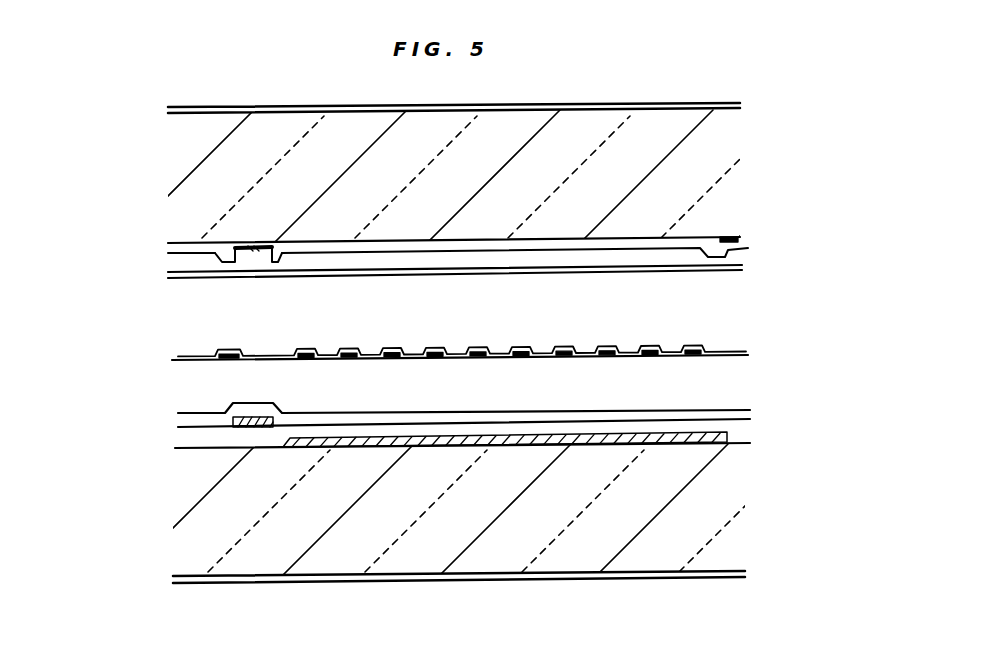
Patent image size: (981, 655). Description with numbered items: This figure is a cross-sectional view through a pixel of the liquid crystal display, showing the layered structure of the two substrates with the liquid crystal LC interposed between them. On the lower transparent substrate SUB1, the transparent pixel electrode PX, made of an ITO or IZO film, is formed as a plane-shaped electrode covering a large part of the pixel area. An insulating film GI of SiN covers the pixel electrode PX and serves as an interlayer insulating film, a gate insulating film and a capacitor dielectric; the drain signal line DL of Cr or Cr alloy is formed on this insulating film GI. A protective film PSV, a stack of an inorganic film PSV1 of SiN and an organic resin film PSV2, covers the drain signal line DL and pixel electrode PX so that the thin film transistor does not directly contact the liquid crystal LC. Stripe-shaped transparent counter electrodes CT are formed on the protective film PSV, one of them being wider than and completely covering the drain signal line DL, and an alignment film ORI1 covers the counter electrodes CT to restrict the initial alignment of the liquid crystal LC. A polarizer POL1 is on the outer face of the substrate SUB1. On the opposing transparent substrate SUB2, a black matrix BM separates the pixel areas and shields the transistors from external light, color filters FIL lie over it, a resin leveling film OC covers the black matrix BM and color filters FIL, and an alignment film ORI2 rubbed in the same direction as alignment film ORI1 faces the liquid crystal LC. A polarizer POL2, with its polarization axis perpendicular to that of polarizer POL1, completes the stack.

The polarizer POL2 is at (740, 105).
The transparent substrate SUB2 is at (713, 175).
The color filter FIL is at (380, 237).
The black matrix BM is at (240, 243).
The leveling film OC is at (750, 255).
The alignment film ORI2 is at (742, 267).
The liquid crystal LC is at (200, 307).
The alignment film ORI1 is at (747, 352).
The counter electrode CT is at (230, 350).
The protective film PSV is at (381, 397).
The organic film PSV2 is at (192, 383).
The inorganic film PSV1 is at (180, 418).
The drain signal line DL is at (242, 428).
The pixel electrode PX is at (620, 448).
The insulating film GI is at (732, 427).
The transparent substrate SUB1 is at (747, 513).
The polarizer POL1 is at (745, 573).